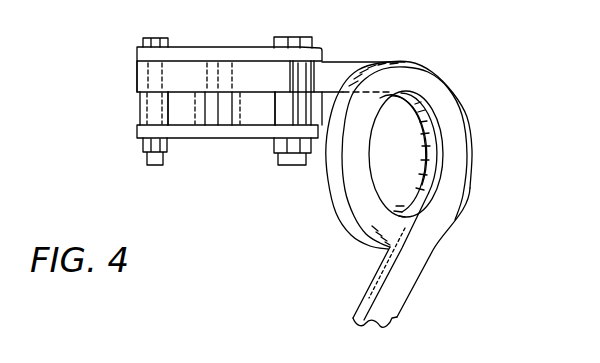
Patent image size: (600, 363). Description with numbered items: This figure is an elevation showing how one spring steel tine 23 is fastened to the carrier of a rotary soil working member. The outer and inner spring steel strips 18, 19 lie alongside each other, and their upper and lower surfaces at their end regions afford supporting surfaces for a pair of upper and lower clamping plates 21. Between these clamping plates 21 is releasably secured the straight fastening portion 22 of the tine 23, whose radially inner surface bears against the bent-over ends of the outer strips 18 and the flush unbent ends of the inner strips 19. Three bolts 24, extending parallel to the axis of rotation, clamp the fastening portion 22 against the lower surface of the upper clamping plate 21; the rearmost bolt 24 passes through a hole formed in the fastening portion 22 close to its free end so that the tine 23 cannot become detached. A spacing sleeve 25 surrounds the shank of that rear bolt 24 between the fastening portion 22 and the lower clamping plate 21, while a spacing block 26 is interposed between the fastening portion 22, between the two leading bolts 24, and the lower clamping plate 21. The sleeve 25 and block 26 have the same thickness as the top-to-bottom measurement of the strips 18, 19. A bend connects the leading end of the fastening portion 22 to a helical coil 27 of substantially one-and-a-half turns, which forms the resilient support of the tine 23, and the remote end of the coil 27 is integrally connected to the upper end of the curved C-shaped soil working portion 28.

The outer spring steel strip 18 is at (180, 122).
The inner spring steel strip 19 is at (225, 125).
The clamping plate 21 is at (138, 49).
The fastening portion 22 is at (340, 66).
The spring steel tine 23 is at (458, 209).
The bolt 24 is at (143, 39).
The spacing sleeve 25 is at (141, 106).
The spacing block 26 is at (281, 100).
The helical coil 27 is at (420, 147).
The soil working portion 28 is at (375, 273).